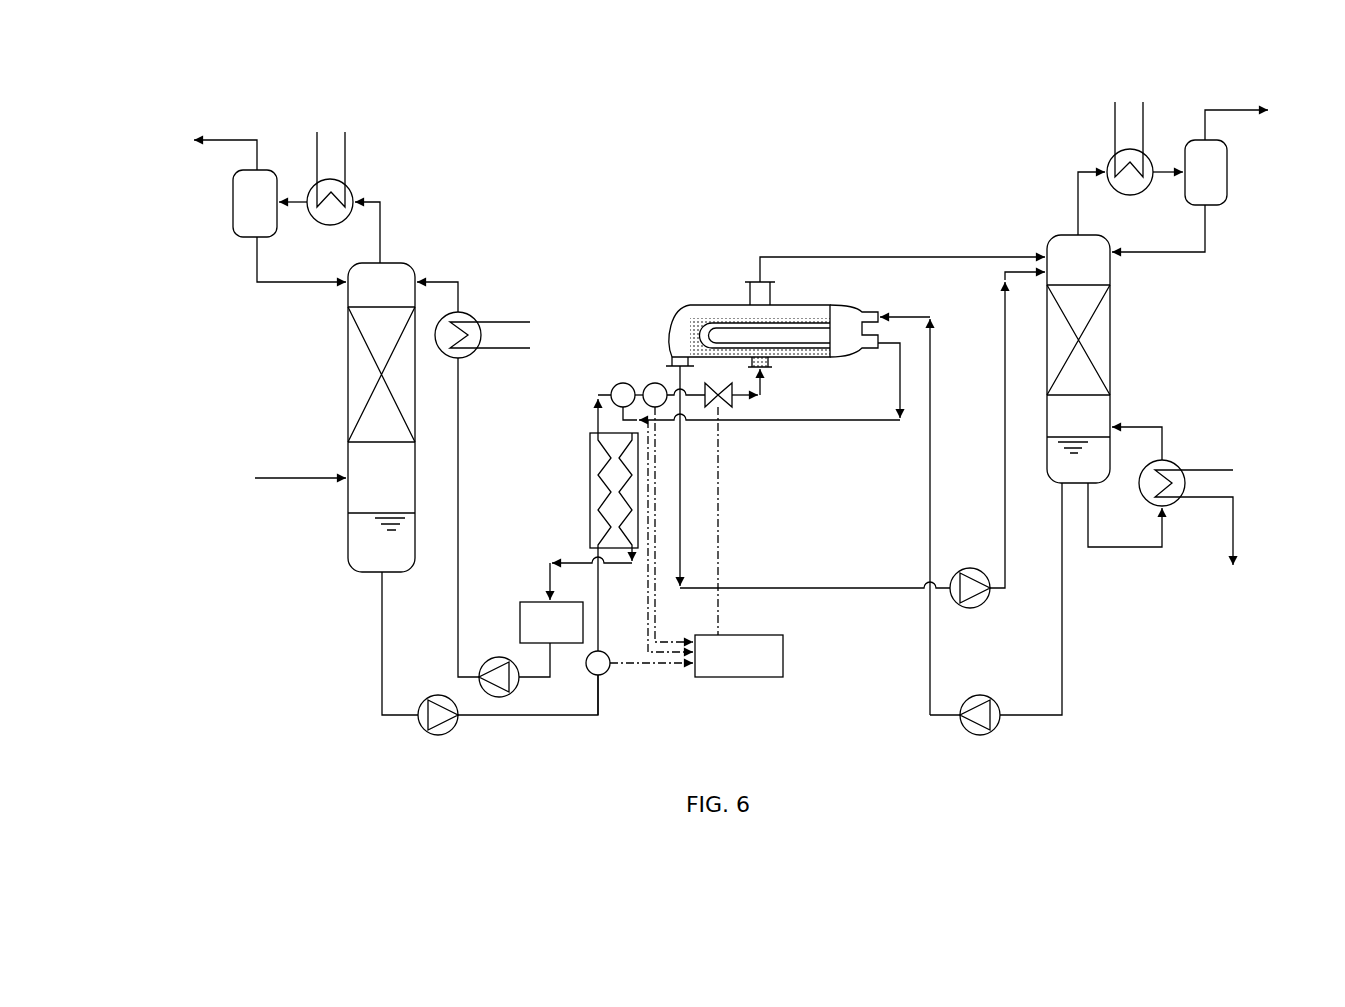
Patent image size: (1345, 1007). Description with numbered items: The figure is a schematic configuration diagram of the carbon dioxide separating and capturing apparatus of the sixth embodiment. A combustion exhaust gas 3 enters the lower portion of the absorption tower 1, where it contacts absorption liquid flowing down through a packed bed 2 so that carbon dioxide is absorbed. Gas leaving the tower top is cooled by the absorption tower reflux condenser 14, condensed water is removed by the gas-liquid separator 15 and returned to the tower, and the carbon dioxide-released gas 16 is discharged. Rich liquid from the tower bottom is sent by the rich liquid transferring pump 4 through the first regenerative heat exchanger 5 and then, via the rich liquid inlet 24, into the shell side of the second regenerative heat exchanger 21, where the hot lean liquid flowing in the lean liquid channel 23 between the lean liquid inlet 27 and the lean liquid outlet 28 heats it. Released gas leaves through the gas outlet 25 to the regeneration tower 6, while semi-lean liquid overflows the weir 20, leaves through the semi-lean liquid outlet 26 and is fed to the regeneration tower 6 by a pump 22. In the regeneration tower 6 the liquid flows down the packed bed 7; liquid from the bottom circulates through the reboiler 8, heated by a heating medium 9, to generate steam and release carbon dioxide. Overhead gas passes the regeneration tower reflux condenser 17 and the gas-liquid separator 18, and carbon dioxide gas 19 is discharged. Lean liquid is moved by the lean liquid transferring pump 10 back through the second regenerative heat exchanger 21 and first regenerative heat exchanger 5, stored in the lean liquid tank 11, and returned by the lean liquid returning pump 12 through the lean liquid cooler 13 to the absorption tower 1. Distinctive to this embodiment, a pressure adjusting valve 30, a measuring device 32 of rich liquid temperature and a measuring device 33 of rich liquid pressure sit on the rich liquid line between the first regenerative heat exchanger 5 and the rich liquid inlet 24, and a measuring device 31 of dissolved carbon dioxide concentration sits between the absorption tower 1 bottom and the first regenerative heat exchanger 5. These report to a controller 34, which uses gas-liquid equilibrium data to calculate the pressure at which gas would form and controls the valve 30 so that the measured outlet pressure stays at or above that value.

The absorption tower 1 is at (413, 262).
The packed bed 2 is at (348, 323).
The combustion exhaust gas 3 is at (300, 478).
The rich liquid transferring pump 4 is at (425, 727).
The first regenerative heat exchanger 5 is at (590, 463).
The regeneration tower 6 is at (1047, 237).
The packed bed 7 is at (1112, 325).
The reboiler 8 is at (1175, 462).
The heating medium 9 is at (1222, 470).
The lean liquid transferring pump 10 is at (994, 729).
The lean liquid tank 11 is at (540, 600).
The lean liquid returning pump 12 is at (517, 686).
The lean liquid cooler 13 is at (462, 313).
The absorption tower reflux condenser 14 is at (352, 190).
The gas-liquid separator 15 is at (238, 240).
The carbon dioxide-released gas 16 is at (240, 140).
The regeneration tower reflux condenser 17 is at (1113, 137).
The gas-liquid separator 18 is at (1228, 165).
The carbon dioxide gas 19 is at (1247, 110).
The weir 20 is at (686, 318).
The second regenerative heat exchanger 21 is at (668, 322).
The pump 22 is at (988, 600).
The lean liquid channel 23 is at (800, 322).
The rich liquid inlet 24 is at (770, 372).
The gas outlet 25 is at (757, 282).
The semi-lean liquid outlet 26 is at (668, 368).
The lean liquid inlet 27 is at (882, 305).
The lean liquid outlet 28 is at (870, 348).
The pressure adjusting valve 30 is at (718, 410).
The measuring device of a concentration of the carbon dioxide dissolved in the rich 31 is at (608, 672).
The measuring device of a temperature of the rich liquid 32 is at (612, 390).
The measuring device of a pressure of the rich liquid 33 is at (648, 383).
The controller 34 is at (783, 677).